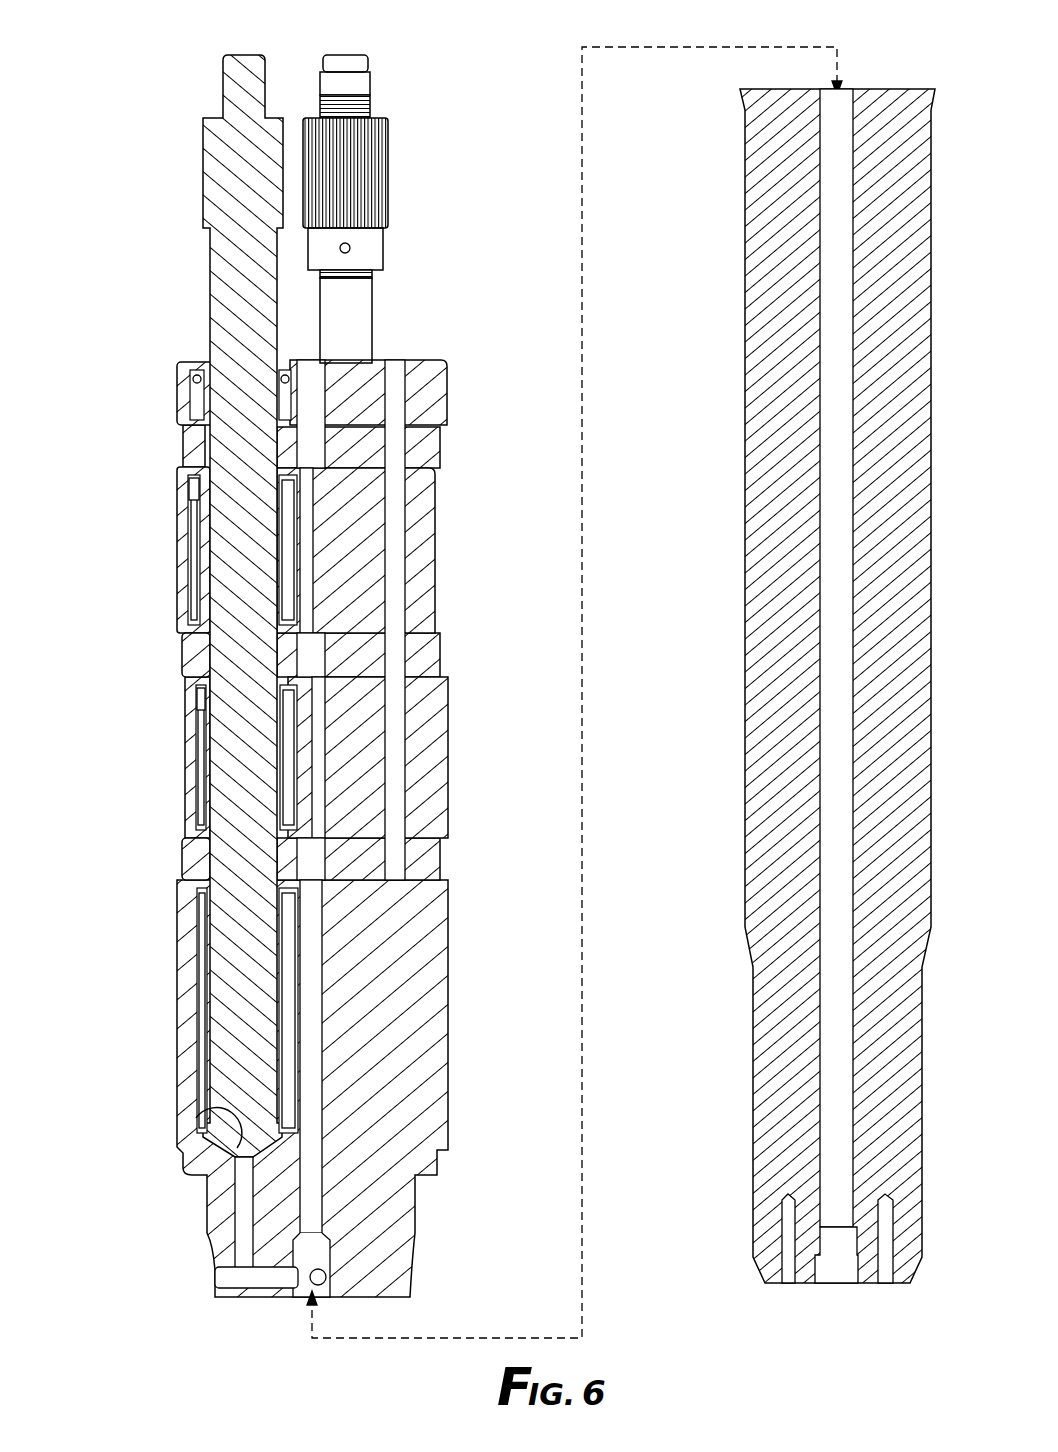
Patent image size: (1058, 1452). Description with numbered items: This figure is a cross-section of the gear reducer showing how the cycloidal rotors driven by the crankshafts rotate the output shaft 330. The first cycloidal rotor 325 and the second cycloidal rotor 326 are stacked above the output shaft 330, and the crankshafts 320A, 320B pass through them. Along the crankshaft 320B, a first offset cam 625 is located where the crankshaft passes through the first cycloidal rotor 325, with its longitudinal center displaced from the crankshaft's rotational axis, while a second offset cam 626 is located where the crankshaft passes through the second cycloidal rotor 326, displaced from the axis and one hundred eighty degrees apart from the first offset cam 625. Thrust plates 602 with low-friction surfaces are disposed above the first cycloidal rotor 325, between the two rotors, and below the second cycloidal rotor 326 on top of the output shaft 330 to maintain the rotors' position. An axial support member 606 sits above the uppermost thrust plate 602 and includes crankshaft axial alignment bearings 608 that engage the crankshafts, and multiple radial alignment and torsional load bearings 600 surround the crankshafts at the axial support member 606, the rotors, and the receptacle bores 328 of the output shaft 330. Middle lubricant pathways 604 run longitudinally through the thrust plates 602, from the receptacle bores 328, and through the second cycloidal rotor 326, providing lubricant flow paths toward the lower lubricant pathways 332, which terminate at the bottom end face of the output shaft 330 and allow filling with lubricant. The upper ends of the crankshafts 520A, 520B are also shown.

The second shaft 520B is at (203, 205).
The crankshaft 320B is at (215, 316).
The crankshaft axial alignment bearings 608 is at (198, 387).
The first offset cam 625 is at (198, 495).
The radial alignment and torsional load bearings 600 is at (188, 528).
The middle lubricant pathways 604 is at (315, 655).
The second offset cam 626 is at (195, 697).
The receptacle bores 328 is at (196, 1107).
The first knob 520A is at (388, 208).
The crankshaft 320A is at (395, 318).
The axial support member 606 is at (447, 378).
The thrust plates 602 is at (440, 442).
The first cycloidal rotor 325 is at (437, 572).
The second cycloidal rotor 326 is at (448, 782).
The output shaft 330 is at (745, 252).
The lower lubricant pathways 332 is at (835, 343).